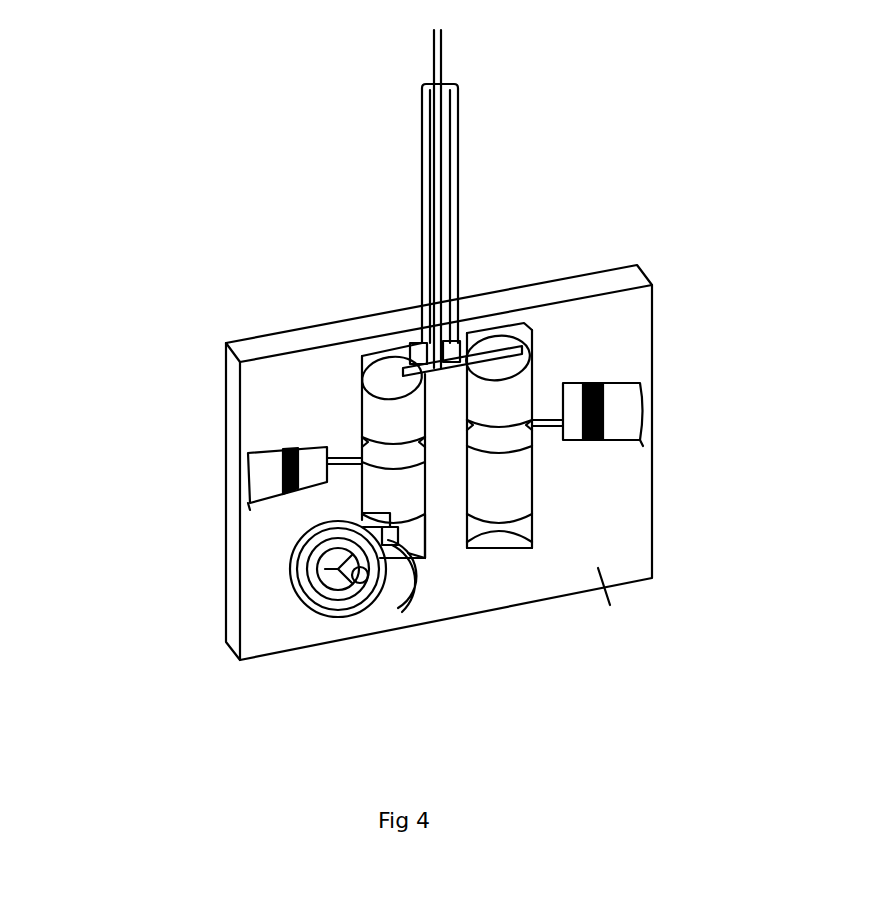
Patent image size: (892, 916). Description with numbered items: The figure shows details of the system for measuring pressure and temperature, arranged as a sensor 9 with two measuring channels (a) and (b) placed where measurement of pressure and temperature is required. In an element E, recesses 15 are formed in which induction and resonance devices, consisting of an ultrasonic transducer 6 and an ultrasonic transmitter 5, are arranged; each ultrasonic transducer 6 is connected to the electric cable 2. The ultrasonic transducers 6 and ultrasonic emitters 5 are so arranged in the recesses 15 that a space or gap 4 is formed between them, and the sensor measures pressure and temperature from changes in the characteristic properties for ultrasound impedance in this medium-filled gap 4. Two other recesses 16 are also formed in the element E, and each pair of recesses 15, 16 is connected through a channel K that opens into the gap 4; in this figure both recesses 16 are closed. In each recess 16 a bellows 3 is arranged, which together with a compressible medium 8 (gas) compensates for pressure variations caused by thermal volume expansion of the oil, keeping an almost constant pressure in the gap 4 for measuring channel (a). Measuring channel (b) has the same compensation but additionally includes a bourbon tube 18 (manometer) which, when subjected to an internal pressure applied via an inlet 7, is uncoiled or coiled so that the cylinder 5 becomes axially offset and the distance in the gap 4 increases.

The electric cable 2 is at (456, 67).
The recesses 15 is at (395, 370).
The ultrasonic transducer 6 is at (392, 422).
The measuring channel a is at (536, 414).
The channel K is at (531, 423).
The measuring channel b is at (361, 448).
The bellows 3 is at (262, 456).
The compressible medium 8 is at (262, 470).
The recesses 16 is at (250, 490).
The space or gap 4 is at (380, 488).
The ultrasonic transmitter 5 is at (362, 516).
The bourbon tube 18 is at (303, 597).
The inlet 7 is at (345, 607).
The sensor 9 is at (477, 580).
The element E is at (607, 606).